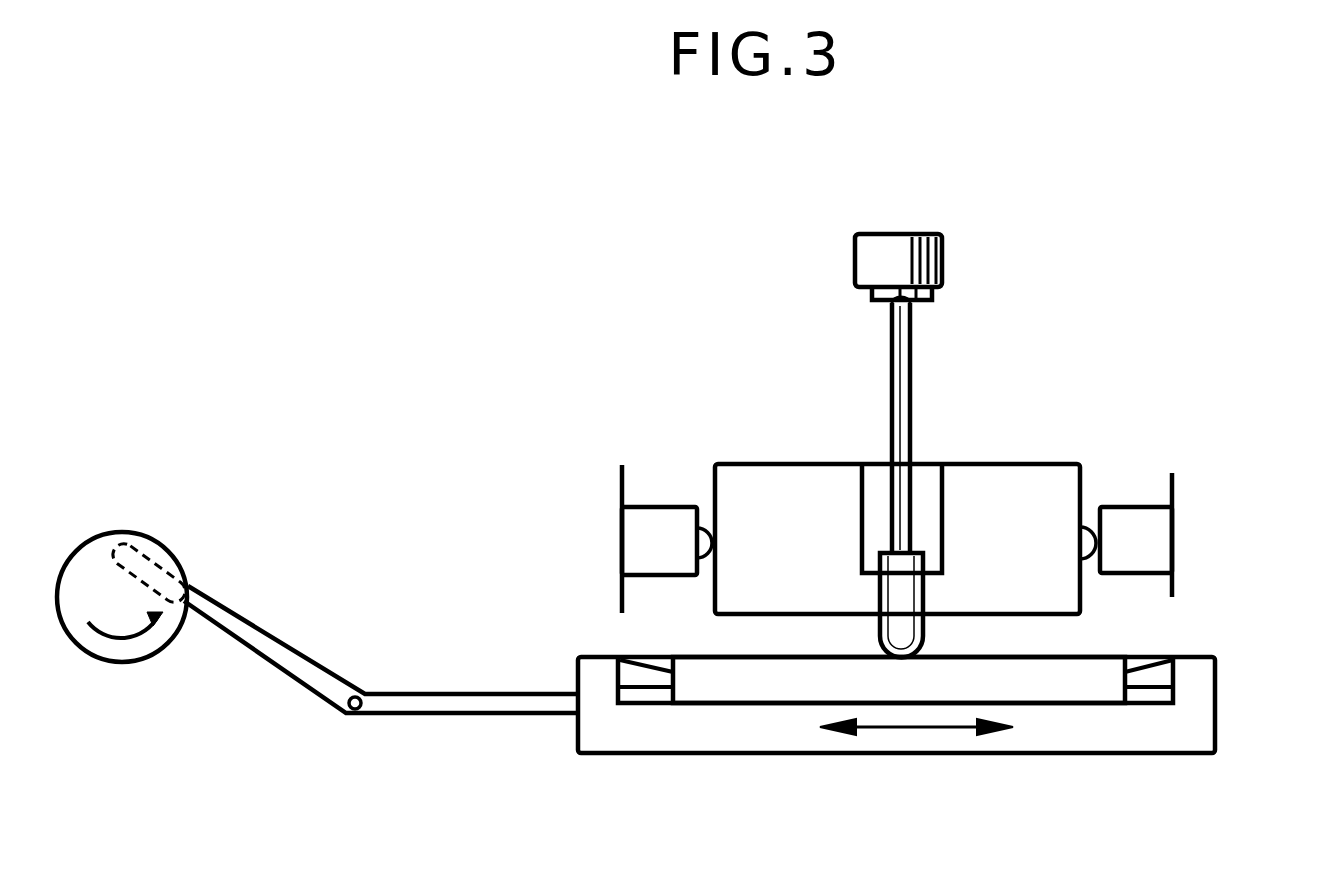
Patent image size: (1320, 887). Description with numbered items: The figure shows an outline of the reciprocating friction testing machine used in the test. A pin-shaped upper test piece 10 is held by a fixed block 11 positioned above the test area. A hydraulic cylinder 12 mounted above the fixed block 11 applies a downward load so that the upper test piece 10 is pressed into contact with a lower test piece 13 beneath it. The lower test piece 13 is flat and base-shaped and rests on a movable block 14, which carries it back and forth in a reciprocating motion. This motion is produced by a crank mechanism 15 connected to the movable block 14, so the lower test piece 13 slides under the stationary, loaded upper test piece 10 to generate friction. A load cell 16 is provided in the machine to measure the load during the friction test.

The upper test piece 10 is at (925, 641).
The fixed block 11 is at (1025, 463).
The hydraulic cylinder 12 is at (890, 228).
The lower test piece 13 is at (1080, 680).
The movable block 14 is at (680, 755).
The crank mechanism 15 is at (191, 636).
The load cell 16 is at (1157, 523).